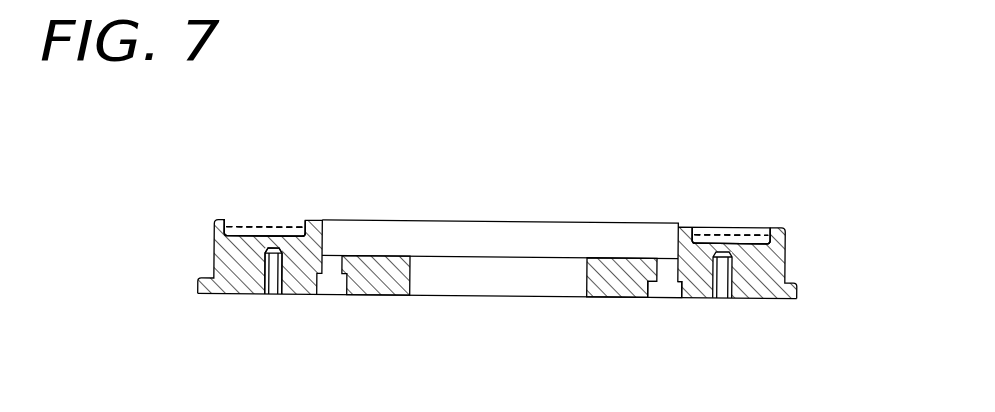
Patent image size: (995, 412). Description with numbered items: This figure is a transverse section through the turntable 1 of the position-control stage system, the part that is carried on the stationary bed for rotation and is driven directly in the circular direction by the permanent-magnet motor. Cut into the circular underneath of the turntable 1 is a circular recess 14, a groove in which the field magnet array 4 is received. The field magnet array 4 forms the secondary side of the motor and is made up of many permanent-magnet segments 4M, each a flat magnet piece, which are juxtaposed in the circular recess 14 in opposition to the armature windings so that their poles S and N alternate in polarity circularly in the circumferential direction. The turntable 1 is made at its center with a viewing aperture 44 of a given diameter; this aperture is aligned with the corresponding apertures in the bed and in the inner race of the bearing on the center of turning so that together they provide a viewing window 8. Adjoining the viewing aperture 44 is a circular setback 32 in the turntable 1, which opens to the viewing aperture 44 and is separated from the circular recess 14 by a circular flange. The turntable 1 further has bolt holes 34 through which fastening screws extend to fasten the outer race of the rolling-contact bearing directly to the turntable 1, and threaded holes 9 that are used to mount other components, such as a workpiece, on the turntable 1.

The turntable 1 is at (230, 272).
The field magnet array 4 is at (235, 222).
The permanent-magnet segments 4M is at (497, 231).
The south magnetic pole S is at (267, 221).
The north magnetic pole N is at (290, 262).
The circular recess 14 is at (277, 243).
The viewing window 8 is at (478, 277).
The circular setback 32 is at (638, 257).
The bolt holes 34 is at (670, 292).
The viewing aperture 44 is at (410, 272).
The threaded holes 9 is at (274, 274).